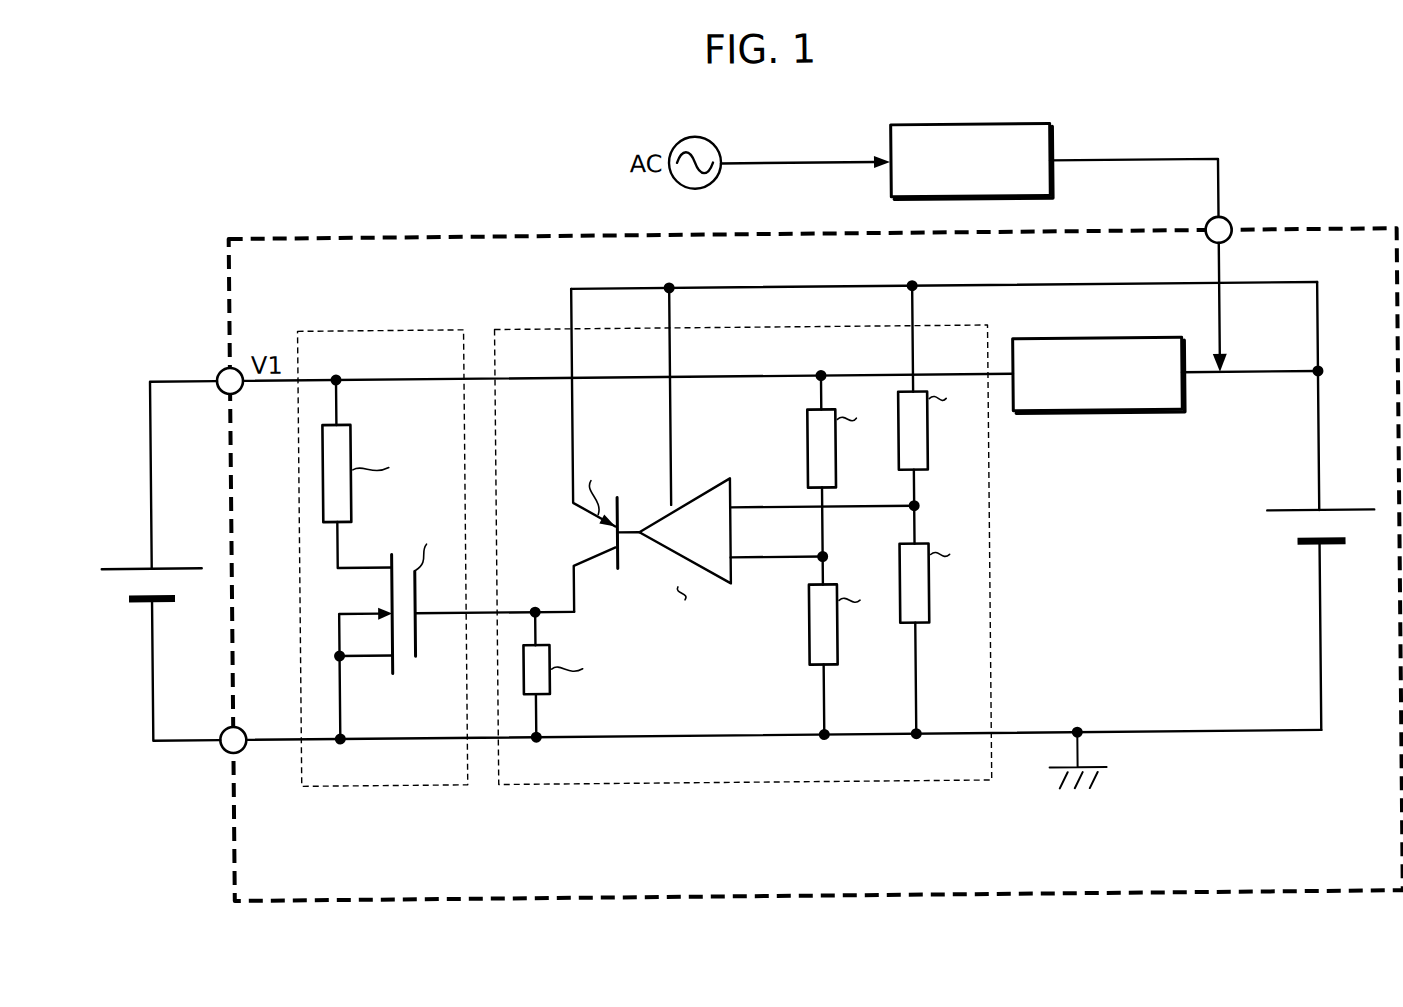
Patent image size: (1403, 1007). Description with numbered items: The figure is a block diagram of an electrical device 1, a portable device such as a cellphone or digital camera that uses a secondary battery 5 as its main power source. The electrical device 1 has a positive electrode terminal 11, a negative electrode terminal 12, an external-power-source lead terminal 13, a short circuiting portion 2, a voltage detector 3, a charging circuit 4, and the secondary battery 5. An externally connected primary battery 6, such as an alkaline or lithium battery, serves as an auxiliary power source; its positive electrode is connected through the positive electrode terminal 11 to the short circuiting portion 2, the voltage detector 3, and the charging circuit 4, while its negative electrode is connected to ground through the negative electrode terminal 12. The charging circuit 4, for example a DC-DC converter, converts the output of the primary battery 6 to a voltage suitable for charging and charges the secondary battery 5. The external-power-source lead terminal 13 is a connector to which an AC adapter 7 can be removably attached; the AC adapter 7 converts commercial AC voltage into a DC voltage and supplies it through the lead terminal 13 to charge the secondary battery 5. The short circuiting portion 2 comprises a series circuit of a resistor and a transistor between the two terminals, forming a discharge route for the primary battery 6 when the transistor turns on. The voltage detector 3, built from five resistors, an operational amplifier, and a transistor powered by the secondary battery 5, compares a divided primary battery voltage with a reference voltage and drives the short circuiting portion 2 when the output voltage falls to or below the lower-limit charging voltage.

The electrical device 1 is at (1343, 239).
The short circuiting portion 2 is at (368, 790).
The voltage detector 3 is at (698, 790).
The charging circuit 4 is at (1098, 421).
The secondary battery 5 is at (1285, 541).
The primary battery 6 is at (120, 594).
The AC adapter 7 is at (990, 131).
The positive electrode terminal 11 is at (218, 371).
The negative electrode terminal 12 is at (222, 757).
The external-power-source lead terminal 13 is at (1230, 230).